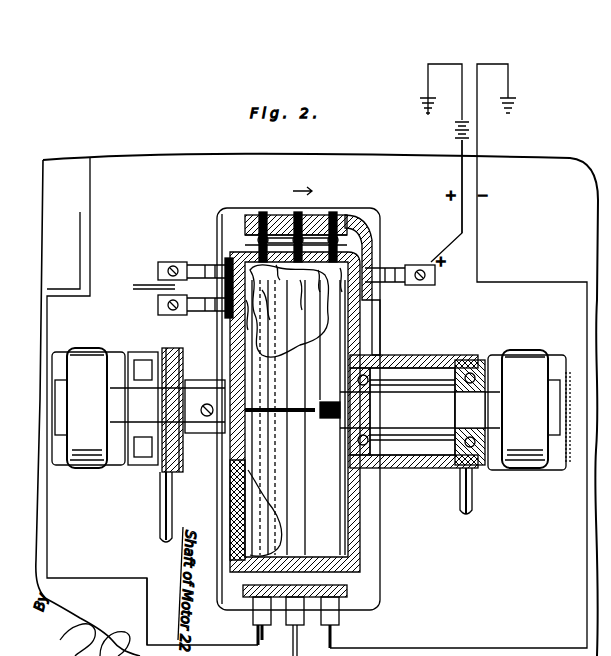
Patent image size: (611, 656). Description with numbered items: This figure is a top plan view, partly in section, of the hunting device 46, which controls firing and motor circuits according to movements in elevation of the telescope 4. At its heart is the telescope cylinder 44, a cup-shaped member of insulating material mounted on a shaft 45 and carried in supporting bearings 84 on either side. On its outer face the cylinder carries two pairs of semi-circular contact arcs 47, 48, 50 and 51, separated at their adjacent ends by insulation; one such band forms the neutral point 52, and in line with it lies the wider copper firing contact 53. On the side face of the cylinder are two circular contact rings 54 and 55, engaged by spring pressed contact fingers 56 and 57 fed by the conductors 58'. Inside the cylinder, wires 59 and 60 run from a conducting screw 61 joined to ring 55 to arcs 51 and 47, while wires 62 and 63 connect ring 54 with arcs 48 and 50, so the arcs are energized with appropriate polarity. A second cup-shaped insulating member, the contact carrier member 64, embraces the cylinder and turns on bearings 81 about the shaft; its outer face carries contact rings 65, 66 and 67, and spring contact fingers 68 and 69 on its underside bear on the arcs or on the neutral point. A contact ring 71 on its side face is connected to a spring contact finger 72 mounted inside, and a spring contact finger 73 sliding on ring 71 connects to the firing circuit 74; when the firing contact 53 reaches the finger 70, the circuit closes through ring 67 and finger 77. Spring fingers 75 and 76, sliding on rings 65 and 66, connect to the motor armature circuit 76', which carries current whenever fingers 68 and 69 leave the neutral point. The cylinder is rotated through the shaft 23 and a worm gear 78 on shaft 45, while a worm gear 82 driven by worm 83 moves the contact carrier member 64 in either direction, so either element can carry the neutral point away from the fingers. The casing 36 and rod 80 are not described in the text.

The telescope 4 is at (301, 183).
The shaft 23 is at (165, 482).
The motor casing 36 is at (353, 232).
The telescope cylinder 44 is at (230, 277).
The shaft 45 is at (135, 375).
The hunting device 46 is at (204, 435).
The contact arc 47 is at (262, 417).
The contact arc 48 is at (292, 417).
The contact arc 50 is at (263, 417).
The contact arc 51 is at (318, 417).
The neutral point 52 is at (280, 398).
The firing contact 53 is at (331, 349).
The contact ring 54 is at (228, 517).
The contact ring 55 is at (232, 548).
The contact finger 56 is at (187, 265).
The contact finger 57 is at (190, 313).
The conductors 58' is at (214, 304).
The wire 59 is at (289, 311).
The wire 60 is at (296, 231).
The conducting screw 61 is at (288, 273).
The wire 62 is at (256, 315).
The wire 63 is at (310, 281).
The contact carrier member 64 is at (383, 243).
The contact ring 65 is at (258, 220).
The contact ring 66 is at (296, 240).
The contact ring 67 is at (322, 240).
The spring contact finger 68 is at (278, 236).
The spring contact finger 69 is at (320, 243).
The finger 70 is at (381, 230).
The contact ring 71 is at (385, 257).
The spring contact finger 72 is at (334, 280).
The spring contact finger 73 is at (400, 269).
The firing circuit 74 is at (465, 229).
The spring finger 75 is at (255, 622).
The spring finger 76 is at (303, 626).
The circuit 76' is at (121, 611).
The spring finger 77 is at (335, 621).
The worm gear 78 is at (168, 350).
The rod 80 is at (476, 498).
The bearings 81 is at (440, 362).
The worm gear 82 is at (465, 360).
The worm 83 is at (462, 470).
The supporting bearings 84 is at (95, 352).